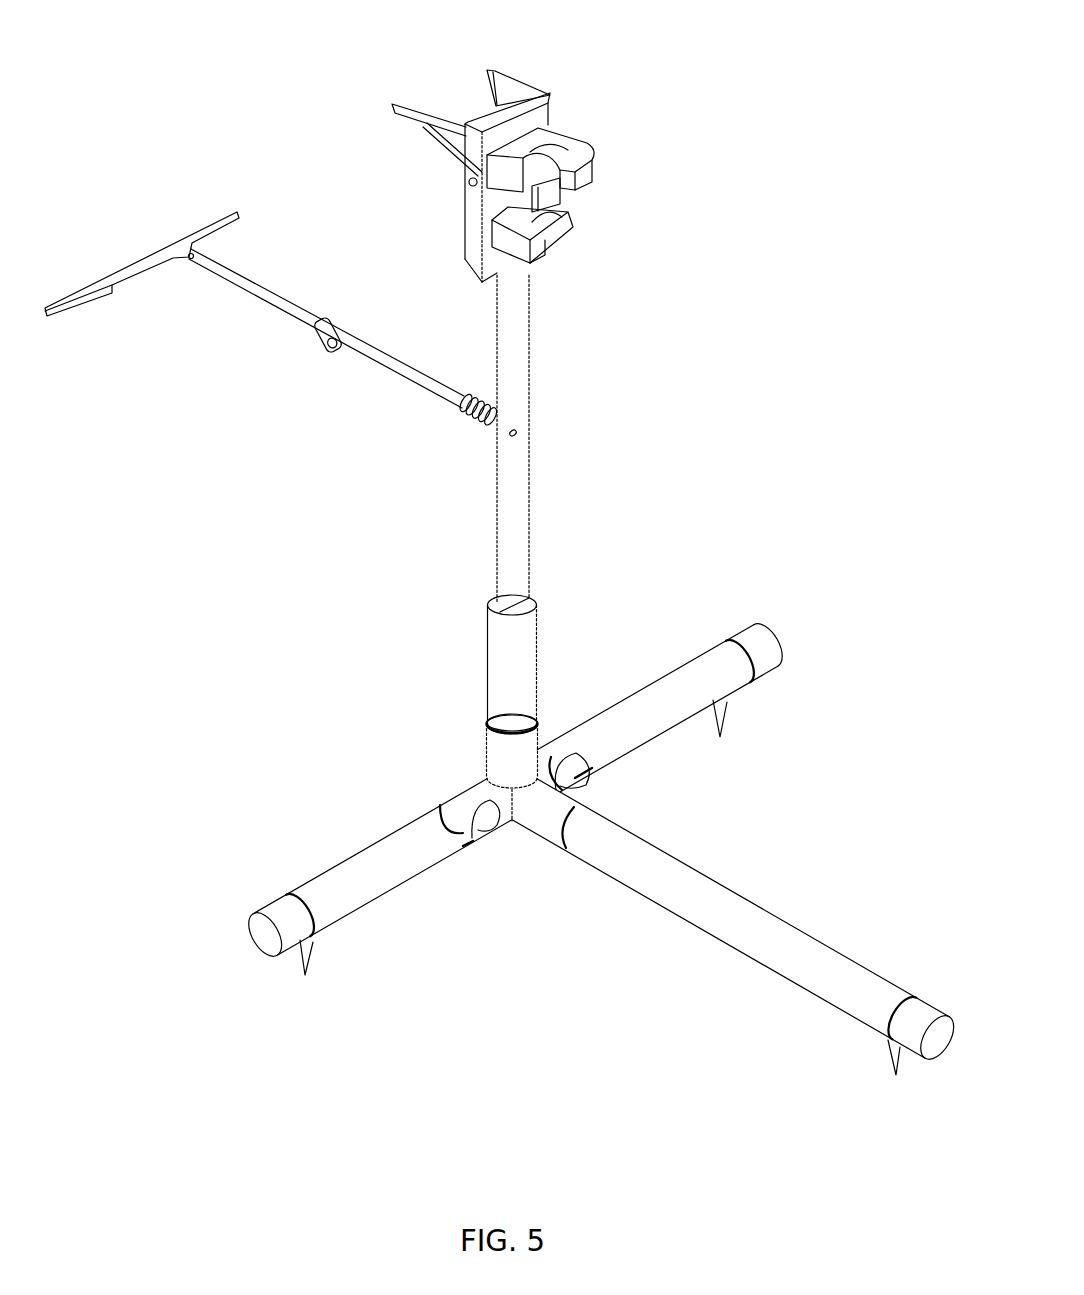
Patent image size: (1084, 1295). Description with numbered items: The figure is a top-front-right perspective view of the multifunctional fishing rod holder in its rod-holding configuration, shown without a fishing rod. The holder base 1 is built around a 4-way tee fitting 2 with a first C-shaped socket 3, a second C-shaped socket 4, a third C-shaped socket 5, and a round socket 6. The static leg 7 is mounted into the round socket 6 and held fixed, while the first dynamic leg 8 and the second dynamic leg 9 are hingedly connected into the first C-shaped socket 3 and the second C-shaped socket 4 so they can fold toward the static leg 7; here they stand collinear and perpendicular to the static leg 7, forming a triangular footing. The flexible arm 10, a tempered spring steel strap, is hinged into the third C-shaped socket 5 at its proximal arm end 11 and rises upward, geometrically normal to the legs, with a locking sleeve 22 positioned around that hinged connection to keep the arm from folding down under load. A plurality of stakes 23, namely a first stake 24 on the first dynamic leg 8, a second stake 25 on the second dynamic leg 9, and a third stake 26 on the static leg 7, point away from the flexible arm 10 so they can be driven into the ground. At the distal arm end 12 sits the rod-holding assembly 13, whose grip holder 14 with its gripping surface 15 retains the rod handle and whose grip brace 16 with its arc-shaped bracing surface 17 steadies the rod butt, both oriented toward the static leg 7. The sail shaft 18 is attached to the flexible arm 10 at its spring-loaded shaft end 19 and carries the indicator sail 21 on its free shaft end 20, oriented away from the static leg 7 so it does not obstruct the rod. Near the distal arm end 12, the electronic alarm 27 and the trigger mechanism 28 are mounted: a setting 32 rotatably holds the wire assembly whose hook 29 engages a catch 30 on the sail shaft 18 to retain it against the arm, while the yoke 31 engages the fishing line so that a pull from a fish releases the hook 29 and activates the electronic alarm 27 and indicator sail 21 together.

The holder base 1 is at (553, 1043).
The 4-way tee fitting 2 is at (392, 738).
The first C-shaped socket 3 is at (453, 803).
The second C-shaped socket 4 is at (565, 745).
The third C-shaped socket 5 is at (487, 773).
The round socket 6 is at (595, 795).
The static leg 7 is at (792, 926).
The first dynamic leg 8 is at (363, 862).
The second dynamic leg 9 is at (680, 680).
The flexible arm 10 is at (520, 405).
The proximal arm end 11 is at (488, 713).
The distal arm end 12 is at (547, 95).
The rod-holding assembly 13 is at (673, 157).
The grip holder 14 is at (566, 131).
The gripping surface 15 is at (588, 193).
The grip brace 16 is at (575, 233).
The bracing surface 17 is at (568, 258).
The sail shaft 18 is at (290, 296).
The spring-loaded shaft end 19 is at (483, 428).
The free shaft end 20 is at (192, 256).
The indicator sail 21 is at (190, 222).
The locking sleeve 22 is at (517, 740).
The plurality of stakes 23 is at (600, 905).
The first stake 24 is at (306, 955).
The second stake 25 is at (725, 718).
The third stake 26 is at (896, 1048).
The electronic alarm 27 is at (475, 243).
The trigger mechanism 28 is at (363, 90).
The hook 29 is at (488, 70).
The catch 30 is at (318, 350).
The yoke 31 is at (405, 125).
The setting 32 is at (492, 115).